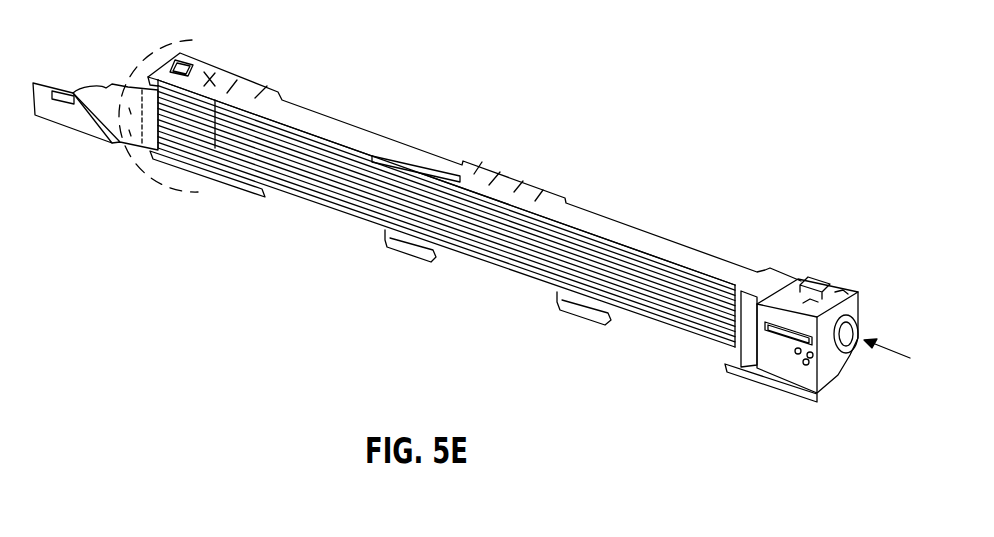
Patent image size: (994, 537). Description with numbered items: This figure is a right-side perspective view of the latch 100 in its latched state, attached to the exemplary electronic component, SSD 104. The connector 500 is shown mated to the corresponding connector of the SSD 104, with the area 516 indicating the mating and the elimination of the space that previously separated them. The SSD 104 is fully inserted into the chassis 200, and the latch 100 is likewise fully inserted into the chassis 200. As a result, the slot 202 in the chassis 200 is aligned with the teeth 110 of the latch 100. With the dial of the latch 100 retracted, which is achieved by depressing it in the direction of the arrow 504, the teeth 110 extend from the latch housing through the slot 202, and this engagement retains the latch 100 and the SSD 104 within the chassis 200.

The latch 100 is at (756, 391).
The SSD 104 is at (493, 245).
The teeth 110 is at (843, 292).
The chassis 200 is at (503, 183).
The slot 202 is at (815, 297).
The connector 500 is at (107, 98).
The arrow 504 is at (890, 354).
The area 516 is at (176, 40).